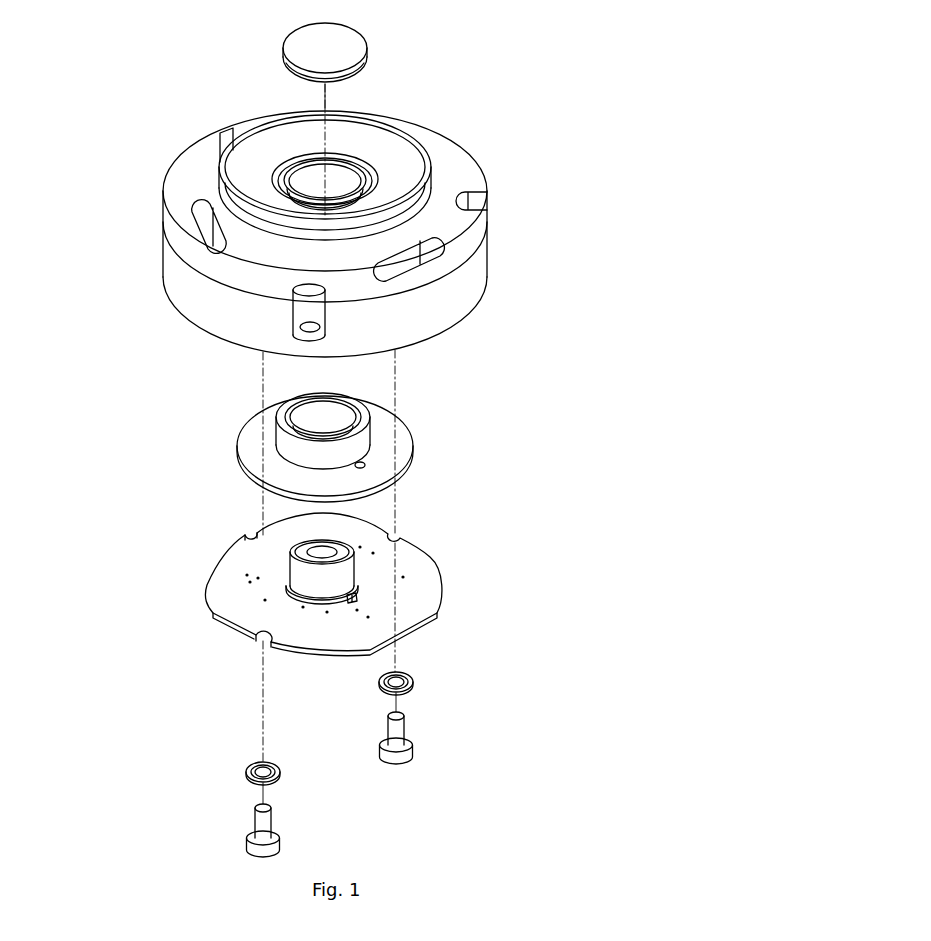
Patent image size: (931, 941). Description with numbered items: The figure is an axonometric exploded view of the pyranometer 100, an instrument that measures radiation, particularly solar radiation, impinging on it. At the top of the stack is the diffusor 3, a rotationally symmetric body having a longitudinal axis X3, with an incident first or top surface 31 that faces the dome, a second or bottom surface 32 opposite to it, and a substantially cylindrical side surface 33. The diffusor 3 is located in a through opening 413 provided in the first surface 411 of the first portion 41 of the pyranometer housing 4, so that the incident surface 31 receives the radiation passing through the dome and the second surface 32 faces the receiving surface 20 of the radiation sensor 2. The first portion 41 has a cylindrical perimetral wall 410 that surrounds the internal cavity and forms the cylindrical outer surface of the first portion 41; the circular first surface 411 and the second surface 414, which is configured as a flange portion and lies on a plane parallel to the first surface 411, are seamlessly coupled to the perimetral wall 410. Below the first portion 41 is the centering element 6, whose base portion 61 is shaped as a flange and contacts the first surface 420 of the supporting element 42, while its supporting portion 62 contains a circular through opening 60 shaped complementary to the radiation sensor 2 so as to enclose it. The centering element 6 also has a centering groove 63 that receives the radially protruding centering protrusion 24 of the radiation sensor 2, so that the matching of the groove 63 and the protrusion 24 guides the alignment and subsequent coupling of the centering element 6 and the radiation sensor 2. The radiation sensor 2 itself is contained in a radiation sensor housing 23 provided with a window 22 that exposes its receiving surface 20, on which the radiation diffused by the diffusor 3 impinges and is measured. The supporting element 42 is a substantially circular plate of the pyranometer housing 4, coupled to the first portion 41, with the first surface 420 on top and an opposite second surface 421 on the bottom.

The pyranometer 100 is at (548, 68).
The diffusor 3 is at (271, 49).
The incident surface 31 is at (335, 33).
The second surface 32 is at (294, 81).
The side surface 33 is at (368, 58).
The longitudinal axis X3 is at (337, 93).
The pyranometer housing 4 is at (113, 158).
The first portion 41 is at (473, 313).
The perimetral wall 410 is at (190, 290).
The first surface 411 is at (398, 189).
The through opening 413 is at (275, 176).
The second surface 414 is at (183, 242).
The supporting element 42 is at (455, 606).
The first surface 420 is at (233, 596).
The second surface 421 is at (245, 646).
The centering element 6 is at (222, 444).
The through opening 60 is at (311, 414).
The base portion 61 is at (392, 450).
The supporting portion 62 is at (364, 438).
The centering groove 63 is at (372, 464).
The radiation sensor 2 is at (278, 573).
The receiving surface 20 is at (253, 537).
The window 22 is at (338, 555).
The radiation sensor housing 23 is at (355, 577).
The centering protrusion 24 is at (364, 597).